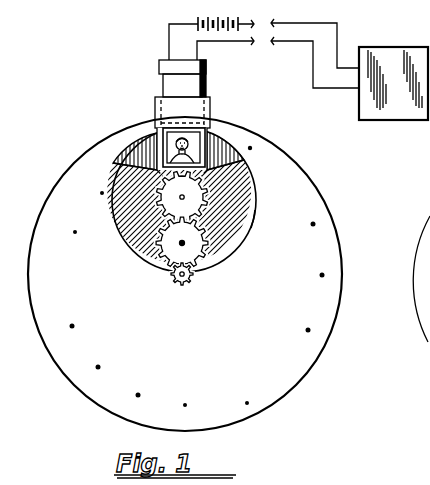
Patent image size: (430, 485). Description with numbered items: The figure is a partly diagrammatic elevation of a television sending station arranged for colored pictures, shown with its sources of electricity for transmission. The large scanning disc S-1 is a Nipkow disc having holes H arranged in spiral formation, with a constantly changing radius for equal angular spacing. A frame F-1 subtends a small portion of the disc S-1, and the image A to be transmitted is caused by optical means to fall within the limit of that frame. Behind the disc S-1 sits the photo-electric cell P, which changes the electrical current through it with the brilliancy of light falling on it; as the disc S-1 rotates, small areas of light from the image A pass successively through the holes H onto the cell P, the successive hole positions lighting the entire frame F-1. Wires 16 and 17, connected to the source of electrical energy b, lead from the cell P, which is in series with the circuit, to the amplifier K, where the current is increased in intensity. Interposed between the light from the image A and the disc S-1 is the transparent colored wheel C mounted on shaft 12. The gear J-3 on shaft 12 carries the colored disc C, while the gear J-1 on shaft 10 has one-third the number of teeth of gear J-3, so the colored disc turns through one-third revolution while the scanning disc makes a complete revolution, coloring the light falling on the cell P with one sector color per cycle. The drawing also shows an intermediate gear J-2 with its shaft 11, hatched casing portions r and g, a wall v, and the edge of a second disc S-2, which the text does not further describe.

The source of electrical energy b is at (198, 22).
The wire 17 is at (169, 39).
The wire 16 is at (197, 51).
The photo-electric cell P is at (206, 82).
The image A is at (210, 122).
The frame F-1 is at (157, 130).
The wall portion r is at (140, 150).
The transparent colored wheel C is at (244, 160).
The hatched body g is at (118, 177).
The wall v is at (244, 235).
The gear J-3 is at (160, 208).
The middle gear J-2 is at (165, 248).
The gear J-1 is at (176, 276).
The shaft 12 is at (184, 198).
The shaft of middle gear 11 is at (184, 244).
The shaft 10 is at (185, 274).
The holes H is at (313, 224).
The scanning disc S-1 is at (333, 316).
The second disc S-2 is at (429, 356).
The amplifier K is at (393, 115).